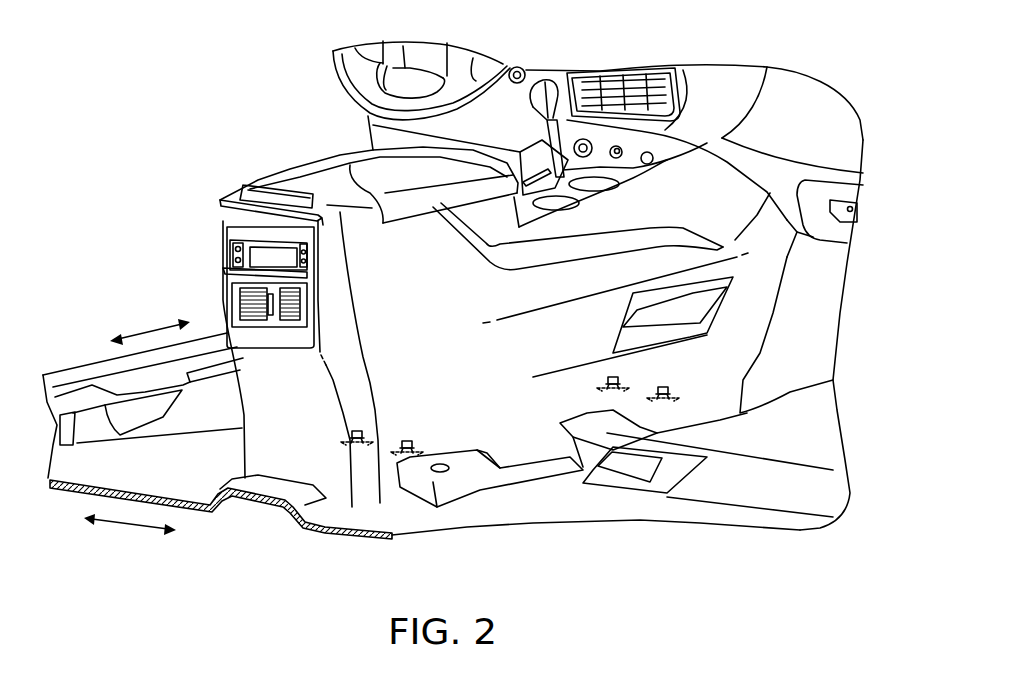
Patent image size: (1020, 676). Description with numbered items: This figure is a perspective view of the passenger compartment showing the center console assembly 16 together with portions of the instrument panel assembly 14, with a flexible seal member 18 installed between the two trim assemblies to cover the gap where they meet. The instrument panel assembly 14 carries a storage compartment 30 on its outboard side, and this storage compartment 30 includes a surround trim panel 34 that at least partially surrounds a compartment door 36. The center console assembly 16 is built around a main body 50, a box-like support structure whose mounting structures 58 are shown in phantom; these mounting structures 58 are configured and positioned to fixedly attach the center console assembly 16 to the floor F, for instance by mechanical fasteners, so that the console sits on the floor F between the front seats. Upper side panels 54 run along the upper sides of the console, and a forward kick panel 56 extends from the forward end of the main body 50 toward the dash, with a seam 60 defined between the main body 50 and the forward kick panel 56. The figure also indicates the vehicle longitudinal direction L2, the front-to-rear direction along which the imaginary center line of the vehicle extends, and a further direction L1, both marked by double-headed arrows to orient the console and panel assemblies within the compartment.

The instrument panel assembly 14 is at (563, 66).
The center console assembly 16 is at (319, 156).
The flexible seal member 18 is at (806, 224).
The storage compartment 30 is at (845, 134).
The surround trim panel 34 is at (778, 175).
The compartment door 36 is at (833, 228).
The main body 50 is at (507, 417).
The upper side panels 54 is at (690, 190).
The forward kick panel 56 is at (810, 297).
The mounting structures 58 is at (357, 432).
The seam 60 is at (763, 330).
The floor F is at (807, 443).
The longitudinal direction L1 is at (130, 523).
The vehicle longitudinal direction L2 is at (147, 327).